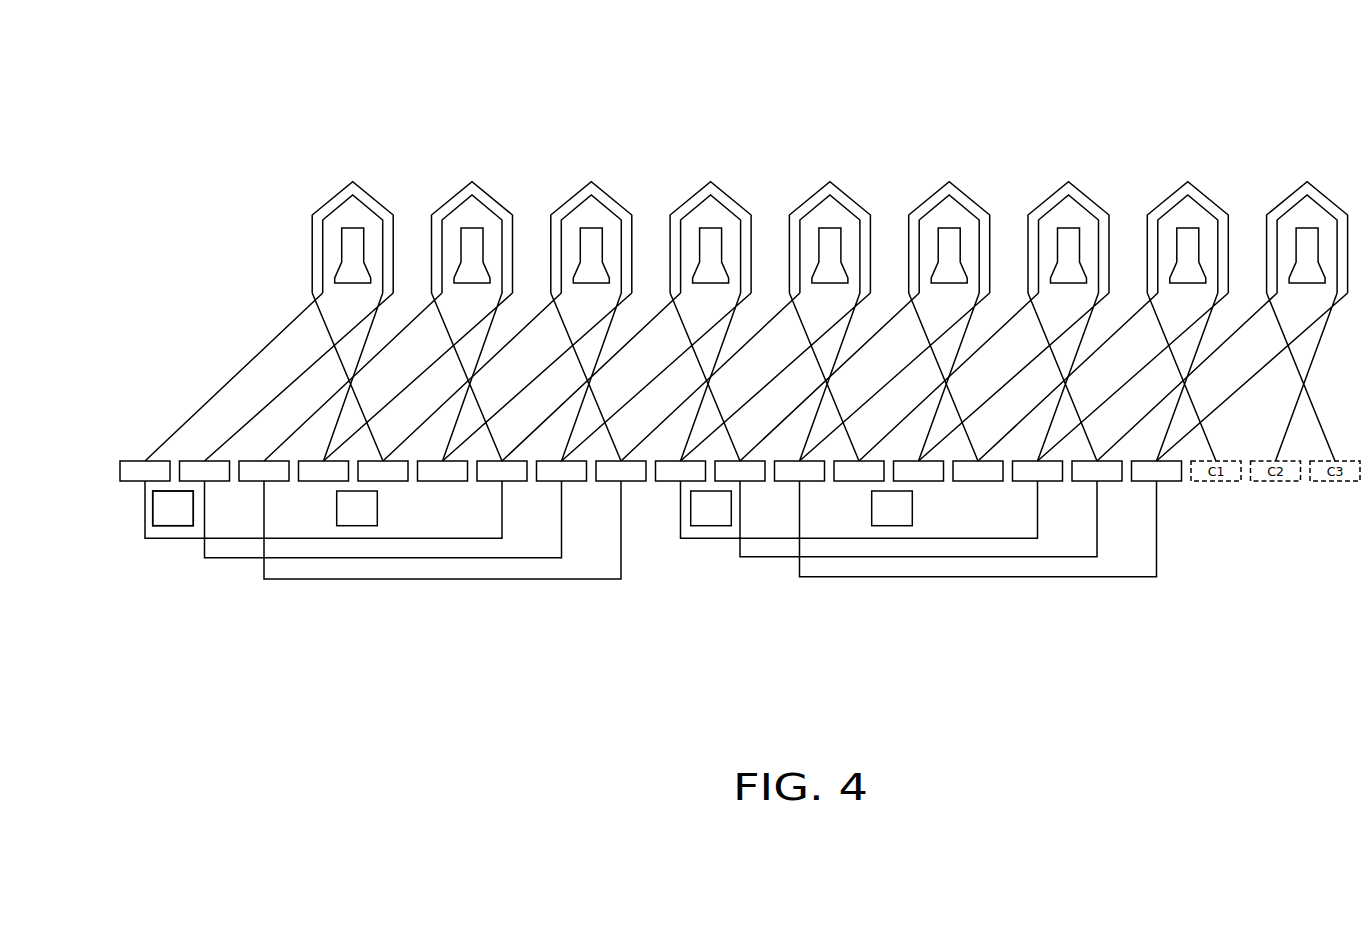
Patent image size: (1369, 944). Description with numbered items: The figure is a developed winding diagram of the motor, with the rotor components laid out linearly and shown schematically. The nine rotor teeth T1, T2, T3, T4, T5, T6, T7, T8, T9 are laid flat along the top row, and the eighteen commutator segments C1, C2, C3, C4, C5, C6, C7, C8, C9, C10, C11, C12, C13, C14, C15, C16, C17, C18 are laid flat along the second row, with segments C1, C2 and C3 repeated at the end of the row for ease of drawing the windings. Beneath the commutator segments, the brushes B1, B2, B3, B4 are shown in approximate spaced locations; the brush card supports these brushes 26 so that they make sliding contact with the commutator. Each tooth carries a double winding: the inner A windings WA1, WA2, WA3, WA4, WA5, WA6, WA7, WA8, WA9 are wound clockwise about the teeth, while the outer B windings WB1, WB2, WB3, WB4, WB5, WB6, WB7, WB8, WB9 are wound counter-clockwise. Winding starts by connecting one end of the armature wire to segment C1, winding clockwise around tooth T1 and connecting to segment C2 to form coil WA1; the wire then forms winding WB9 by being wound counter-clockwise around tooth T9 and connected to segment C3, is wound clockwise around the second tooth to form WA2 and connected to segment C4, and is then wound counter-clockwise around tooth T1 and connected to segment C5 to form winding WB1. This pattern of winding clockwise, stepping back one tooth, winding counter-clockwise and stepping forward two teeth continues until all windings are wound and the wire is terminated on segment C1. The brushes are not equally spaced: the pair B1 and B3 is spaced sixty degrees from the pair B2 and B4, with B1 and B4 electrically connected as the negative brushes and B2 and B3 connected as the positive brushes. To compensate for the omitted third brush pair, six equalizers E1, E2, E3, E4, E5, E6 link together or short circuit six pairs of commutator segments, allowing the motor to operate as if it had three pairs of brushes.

The brushes 26 is at (153, 505).
The inner A winding WA1 is at (336, 207).
The inner A winding WA2 is at (462, 203).
The inner A winding WA3 is at (581, 203).
The inner A winding WA4 is at (701, 203).
The inner A winding WA5 is at (820, 203).
The inner A winding WA6 is at (939, 203).
The inner A winding WA7 is at (1058, 203).
The inner A winding WA8 is at (1178, 203).
The inner A winding WA9 is at (1297, 203).
The outer B winding WB1 is at (372, 195).
The outer B winding WB2 is at (491, 195).
The outer B winding WB3 is at (610, 195).
The outer B winding WB4 is at (730, 195).
The outer B winding WB5 is at (849, 195).
The outer B winding WB6 is at (968, 195).
The outer B winding WB7 is at (1088, 195).
The outer B winding WB8 is at (1207, 195).
The outer B winding WB9 is at (1326, 195).
The tooth T1 is at (353, 255).
The tooth T2 is at (472, 255).
The tooth T3 is at (591, 255).
The tooth T4 is at (711, 255).
The tooth T5 is at (830, 255).
The tooth T6 is at (949, 255).
The tooth T7 is at (1069, 255).
The tooth T8 is at (1188, 255).
The tooth T9 is at (1307, 255).
The commutator segment C1 is at (145, 471).
The commutator segment C2 is at (205, 471).
The commutator segment C3 is at (264, 471).
The commutator segment C4 is at (324, 471).
The commutator segment C5 is at (383, 471).
The commutator segment C6 is at (443, 471).
The commutator segment C7 is at (502, 471).
The commutator segment C8 is at (562, 471).
The commutator segment C9 is at (621, 471).
The commutator segment C10 is at (681, 471).
The commutator segment C11 is at (740, 471).
The commutator segment C12 is at (800, 471).
The commutator segment C13 is at (859, 471).
The commutator segment C14 is at (919, 471).
The commutator segment C15 is at (978, 471).
The commutator segment C16 is at (1038, 471).
The commutator segment C17 is at (1097, 471).
The commutator segment C18 is at (1157, 471).
The brush B1 is at (173, 508).
The brush B2 is at (357, 508).
The brush B3 is at (711, 508).
The brush B4 is at (892, 508).
The equalizer E1 is at (145, 521).
The equalizer E2 is at (204, 544).
The equalizer E3 is at (264, 567).
The equalizer E4 is at (680, 522).
The equalizer E5 is at (740, 550).
The equalizer E6 is at (800, 568).